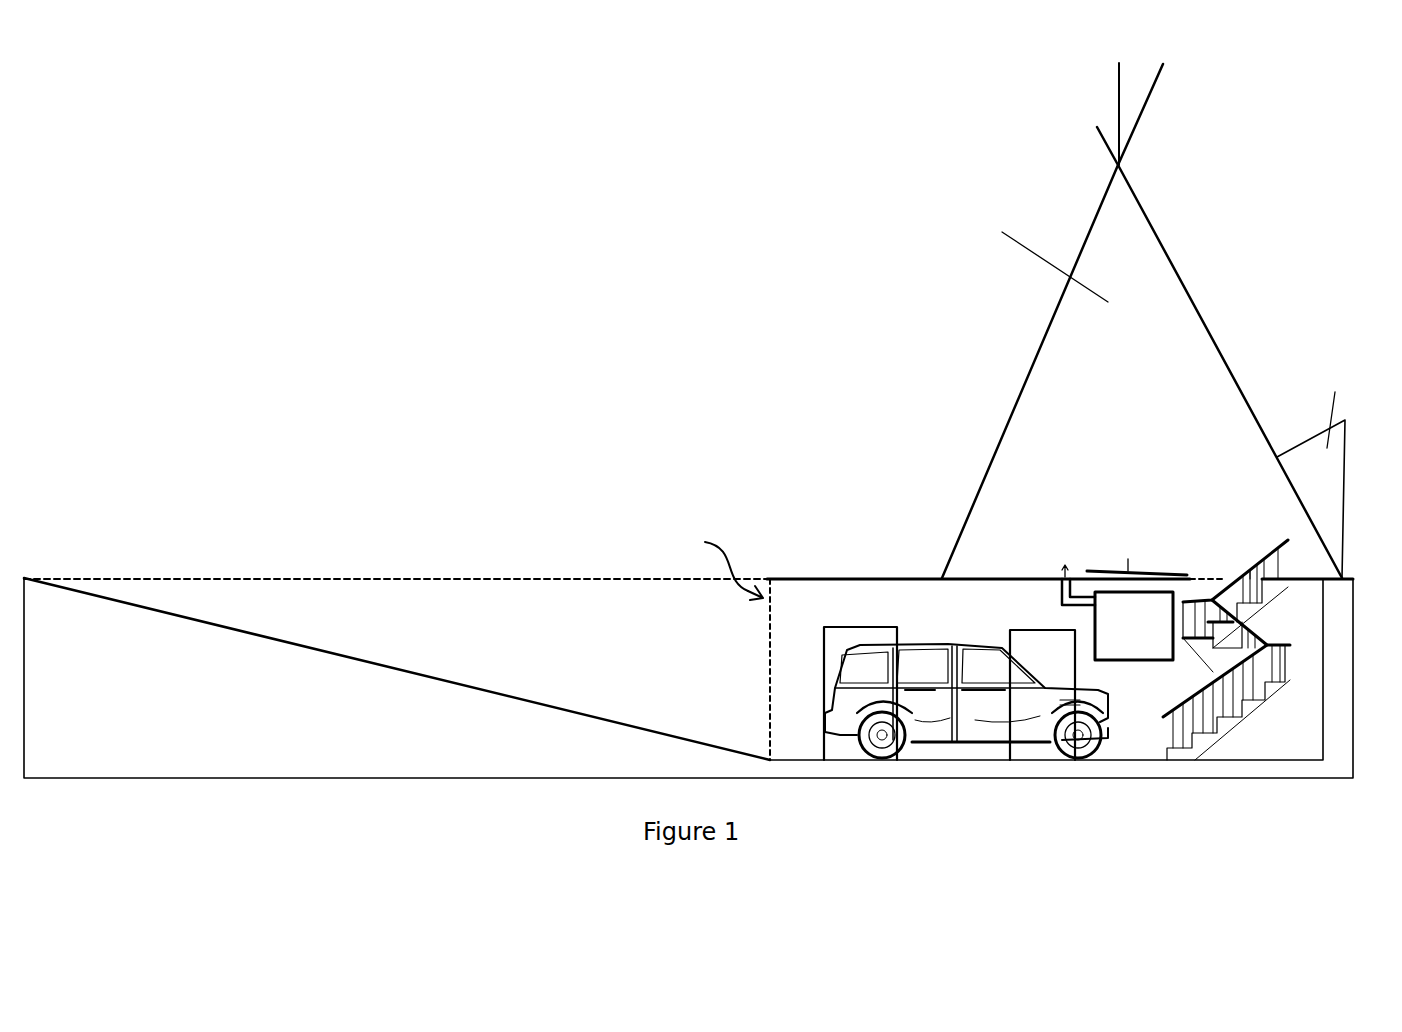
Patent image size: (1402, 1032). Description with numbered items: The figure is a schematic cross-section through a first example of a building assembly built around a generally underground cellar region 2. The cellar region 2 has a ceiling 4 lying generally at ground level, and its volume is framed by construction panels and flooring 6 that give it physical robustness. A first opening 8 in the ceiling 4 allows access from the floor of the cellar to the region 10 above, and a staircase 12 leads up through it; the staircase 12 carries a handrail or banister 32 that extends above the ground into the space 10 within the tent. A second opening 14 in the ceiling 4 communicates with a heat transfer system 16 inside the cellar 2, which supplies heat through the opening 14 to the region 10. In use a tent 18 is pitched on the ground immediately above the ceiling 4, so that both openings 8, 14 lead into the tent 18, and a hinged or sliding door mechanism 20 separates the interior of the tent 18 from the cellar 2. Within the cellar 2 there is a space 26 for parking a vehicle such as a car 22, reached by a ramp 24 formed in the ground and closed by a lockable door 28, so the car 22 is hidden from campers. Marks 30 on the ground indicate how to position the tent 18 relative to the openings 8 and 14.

The cellar region 2 is at (375, 702).
The ceiling 4 is at (817, 578).
The construction panels and flooring 6 is at (793, 757).
The first opening 8 is at (1220, 580).
The region above the cellar 10 is at (1148, 381).
The staircase 12 is at (1238, 688).
The second opening 14 is at (1045, 580).
The heat transfer system 16 is at (1131, 662).
The tent 18 is at (1035, 358).
The hinged or sliding door mechanism 20 is at (1113, 570).
The car 22 is at (938, 720).
The ramp 24 is at (205, 617).
The space within the cellar 26 is at (952, 615).
The lockable door 28 is at (767, 637).
The marks 30 is at (943, 577).
The handrail or banister 32 is at (1275, 548).